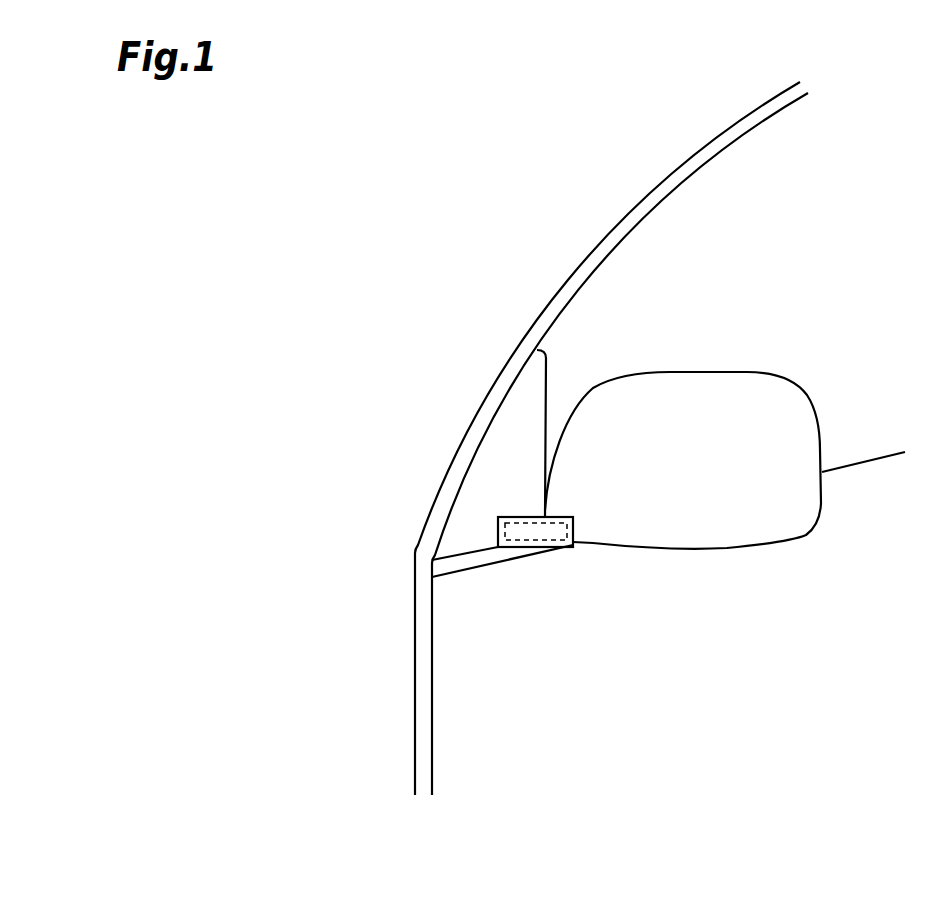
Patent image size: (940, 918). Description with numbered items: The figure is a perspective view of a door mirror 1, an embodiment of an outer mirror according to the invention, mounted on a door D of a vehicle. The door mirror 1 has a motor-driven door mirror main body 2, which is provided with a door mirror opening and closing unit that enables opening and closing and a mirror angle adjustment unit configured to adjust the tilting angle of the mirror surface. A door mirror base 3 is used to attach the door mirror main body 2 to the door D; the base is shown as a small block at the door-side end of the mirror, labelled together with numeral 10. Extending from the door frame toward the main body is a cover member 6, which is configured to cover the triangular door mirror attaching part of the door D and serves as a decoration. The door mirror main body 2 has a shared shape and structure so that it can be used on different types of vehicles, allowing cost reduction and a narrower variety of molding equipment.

The door D is at (614, 230).
The door mirror 1 is at (796, 328).
The door mirror main body 2 is at (805, 391).
The door mirror base 3 is at (540, 530).
The cover member 6 is at (538, 390).
The camera unit 10 is at (561, 567).